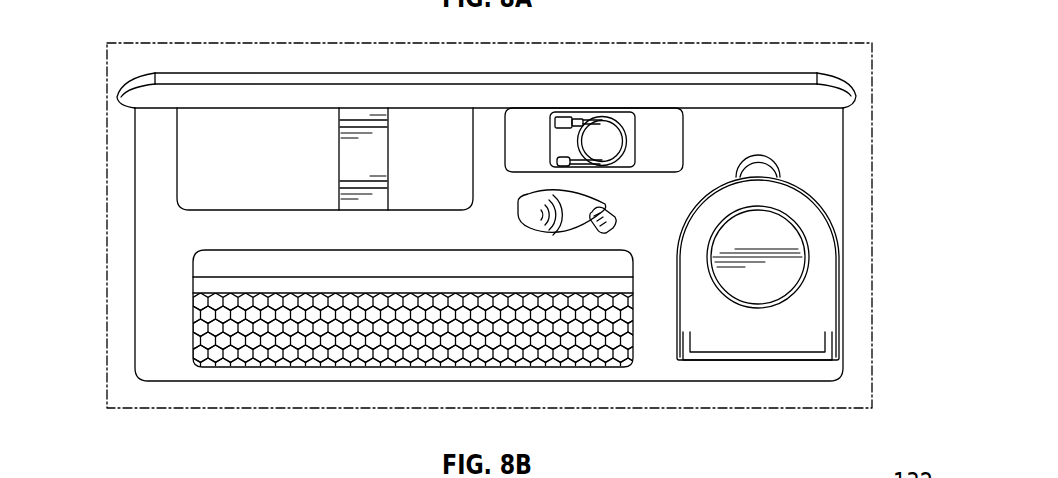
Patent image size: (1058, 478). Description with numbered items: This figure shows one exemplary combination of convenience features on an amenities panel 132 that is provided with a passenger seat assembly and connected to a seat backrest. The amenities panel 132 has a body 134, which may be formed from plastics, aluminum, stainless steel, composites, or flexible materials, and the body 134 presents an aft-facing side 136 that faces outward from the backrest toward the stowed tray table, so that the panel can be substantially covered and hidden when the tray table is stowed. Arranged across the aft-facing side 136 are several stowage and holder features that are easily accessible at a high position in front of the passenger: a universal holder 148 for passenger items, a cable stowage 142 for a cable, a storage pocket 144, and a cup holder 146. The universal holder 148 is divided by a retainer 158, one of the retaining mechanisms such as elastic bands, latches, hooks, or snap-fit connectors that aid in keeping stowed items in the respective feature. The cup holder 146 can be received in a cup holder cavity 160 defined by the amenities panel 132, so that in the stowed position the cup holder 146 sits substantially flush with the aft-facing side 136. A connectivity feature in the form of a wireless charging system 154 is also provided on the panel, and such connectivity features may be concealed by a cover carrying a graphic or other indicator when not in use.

The amenities panel 132 is at (855, 26).
The body 134 is at (828, 208).
The aft-facing side 136 is at (830, 117).
The cable stowage 142 is at (611, 110).
The storage pocket 144 is at (605, 362).
The cup holder 146 is at (822, 288).
The universal holder 148 is at (208, 157).
The wireless charging system 154 is at (591, 203).
The retainer 158 is at (343, 182).
The cup holder cavity 160 is at (758, 160).